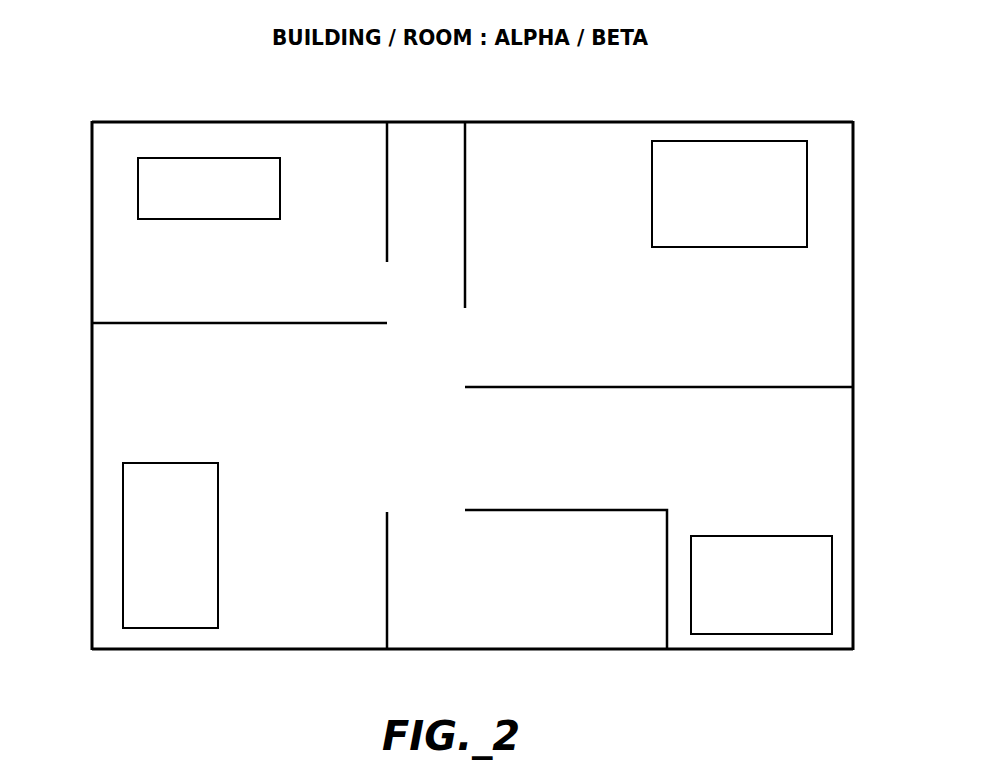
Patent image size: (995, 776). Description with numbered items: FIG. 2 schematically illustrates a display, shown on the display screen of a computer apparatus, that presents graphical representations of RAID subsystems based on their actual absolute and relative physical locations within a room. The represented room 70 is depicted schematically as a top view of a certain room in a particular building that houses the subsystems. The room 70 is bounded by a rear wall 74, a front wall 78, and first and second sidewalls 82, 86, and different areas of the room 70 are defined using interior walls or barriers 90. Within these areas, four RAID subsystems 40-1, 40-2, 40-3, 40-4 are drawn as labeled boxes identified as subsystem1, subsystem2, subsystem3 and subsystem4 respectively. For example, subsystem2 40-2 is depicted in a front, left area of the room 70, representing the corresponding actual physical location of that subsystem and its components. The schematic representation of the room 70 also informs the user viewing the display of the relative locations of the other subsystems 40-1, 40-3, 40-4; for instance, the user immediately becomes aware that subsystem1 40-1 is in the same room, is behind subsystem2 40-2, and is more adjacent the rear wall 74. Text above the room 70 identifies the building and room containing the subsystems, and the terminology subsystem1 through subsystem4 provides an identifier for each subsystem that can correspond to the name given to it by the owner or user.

The room 70 is at (473, 371).
The rear wall 74 is at (527, 122).
The front wall 78 is at (524, 650).
The first sidewall 82 is at (91, 420).
The second sidewall 86 is at (857, 330).
The interior walls or barriers 90 is at (632, 387).
The RAID subsystem 40-1 is at (187, 219).
The RAID subsystem 40-2 is at (159, 463).
The RAID subsystem 40-3 is at (717, 247).
The RAID subsystem 40-4 is at (732, 536).